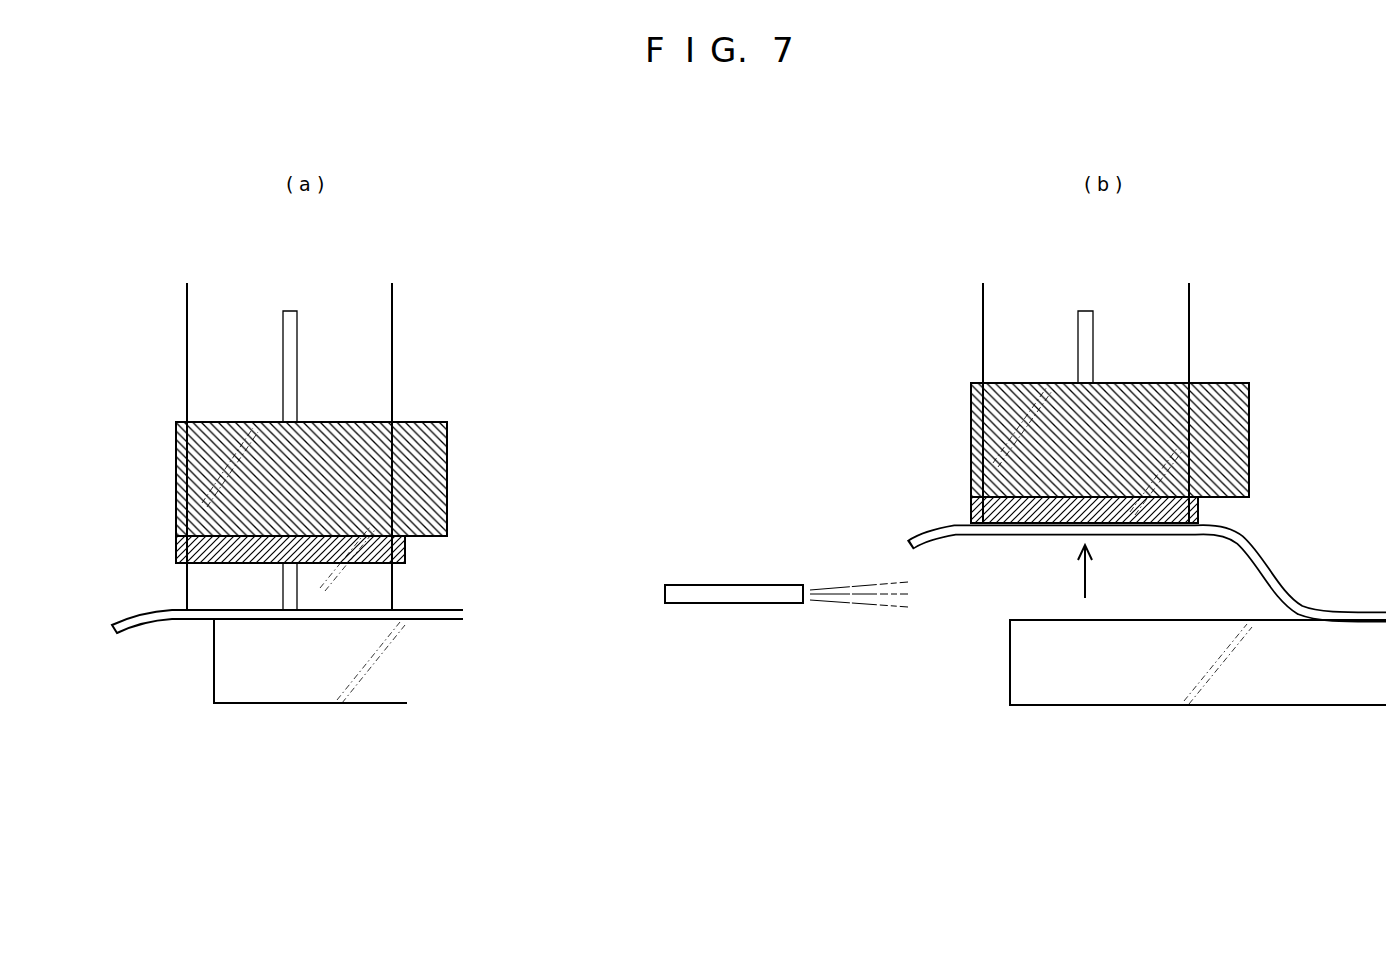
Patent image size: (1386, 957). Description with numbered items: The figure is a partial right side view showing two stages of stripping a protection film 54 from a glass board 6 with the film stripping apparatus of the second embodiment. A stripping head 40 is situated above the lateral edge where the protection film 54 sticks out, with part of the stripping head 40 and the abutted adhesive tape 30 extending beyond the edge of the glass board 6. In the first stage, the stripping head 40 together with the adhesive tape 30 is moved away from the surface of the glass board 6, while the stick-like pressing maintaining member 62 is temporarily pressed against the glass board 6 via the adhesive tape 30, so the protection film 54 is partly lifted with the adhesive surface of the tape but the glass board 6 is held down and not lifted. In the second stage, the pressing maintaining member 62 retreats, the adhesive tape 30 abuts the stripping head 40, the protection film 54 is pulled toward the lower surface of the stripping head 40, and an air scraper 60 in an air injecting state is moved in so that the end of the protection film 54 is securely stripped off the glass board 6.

The glass board 6 is at (214, 685).
The adhesive tape 30 is at (393, 352).
The stripping head 40 is at (177, 548).
The protection film 54 is at (435, 608).
The air scraper 60 is at (711, 585).
The pressing maintaining member 62 is at (297, 348).